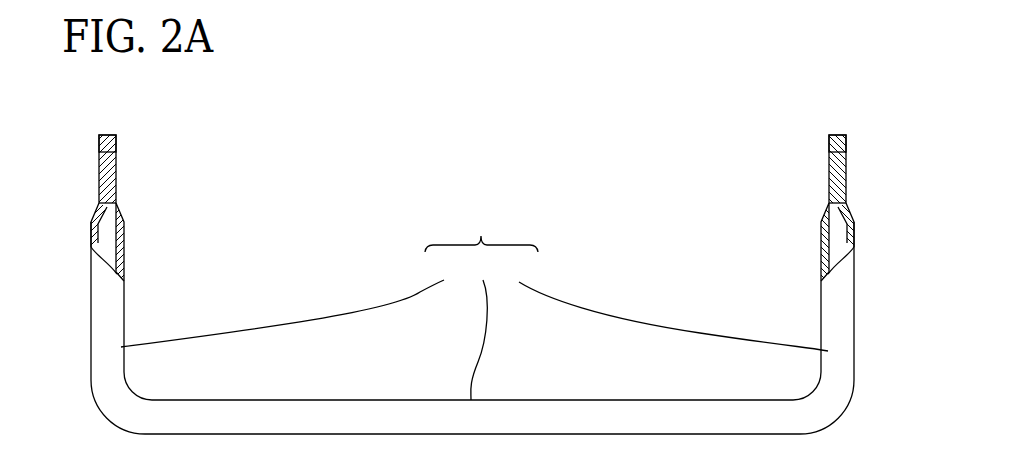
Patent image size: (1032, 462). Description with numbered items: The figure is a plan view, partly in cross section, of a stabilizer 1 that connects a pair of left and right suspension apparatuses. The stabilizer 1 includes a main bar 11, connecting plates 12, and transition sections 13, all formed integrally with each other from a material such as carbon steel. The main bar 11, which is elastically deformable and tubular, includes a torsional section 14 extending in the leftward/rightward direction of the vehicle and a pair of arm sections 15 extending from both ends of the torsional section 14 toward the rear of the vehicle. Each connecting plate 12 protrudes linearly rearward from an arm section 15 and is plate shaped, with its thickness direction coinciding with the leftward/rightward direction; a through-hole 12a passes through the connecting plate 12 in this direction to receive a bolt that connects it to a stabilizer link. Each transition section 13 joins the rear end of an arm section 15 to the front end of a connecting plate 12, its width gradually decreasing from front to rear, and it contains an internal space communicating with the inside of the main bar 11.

The stabilizer 1 is at (852, 130).
The main bar 11 is at (481, 228).
The connecting plate 12 is at (99, 175).
The through-hole 12a is at (116, 163).
The transition section 13 is at (120, 216).
The torsional section 14 is at (482, 327).
The arm section 15 is at (474, 302).